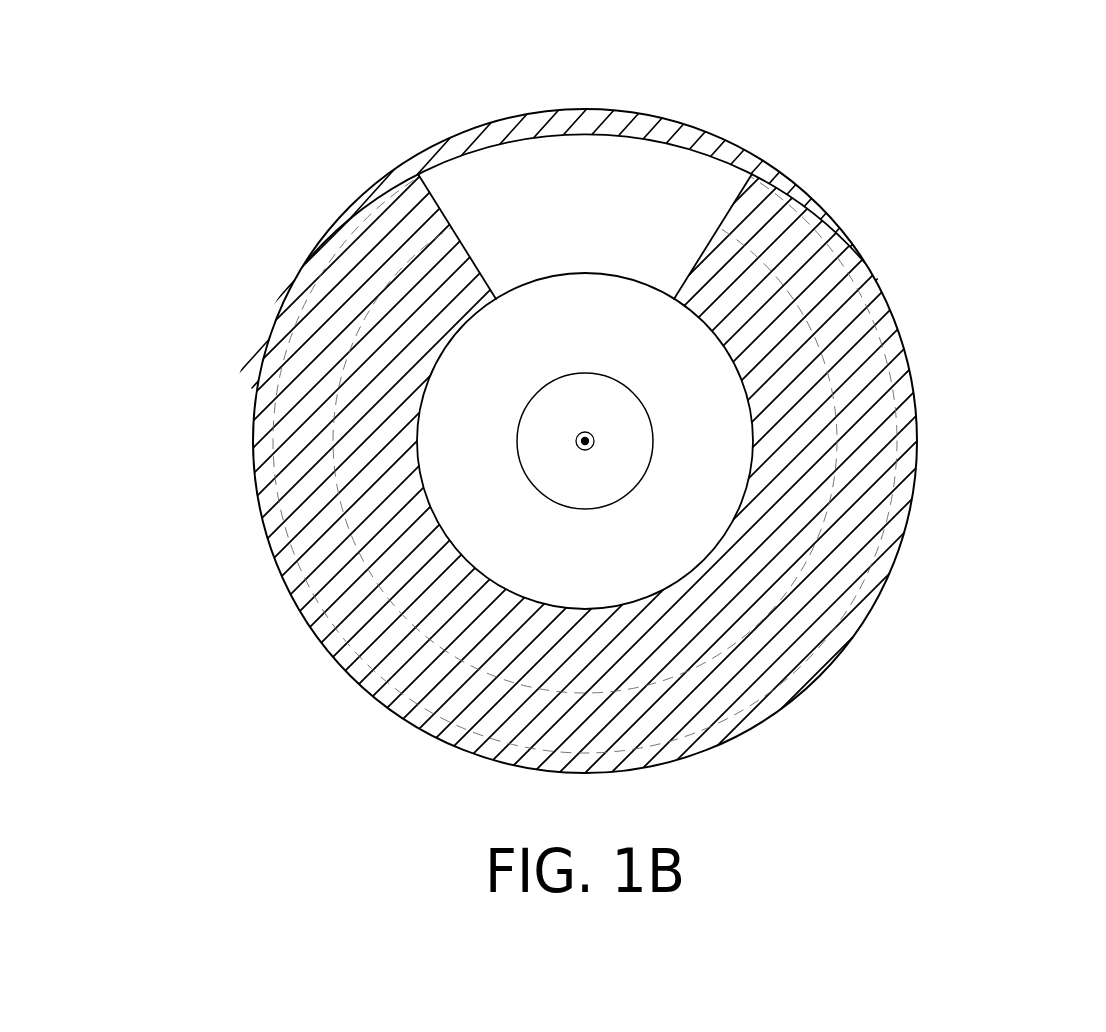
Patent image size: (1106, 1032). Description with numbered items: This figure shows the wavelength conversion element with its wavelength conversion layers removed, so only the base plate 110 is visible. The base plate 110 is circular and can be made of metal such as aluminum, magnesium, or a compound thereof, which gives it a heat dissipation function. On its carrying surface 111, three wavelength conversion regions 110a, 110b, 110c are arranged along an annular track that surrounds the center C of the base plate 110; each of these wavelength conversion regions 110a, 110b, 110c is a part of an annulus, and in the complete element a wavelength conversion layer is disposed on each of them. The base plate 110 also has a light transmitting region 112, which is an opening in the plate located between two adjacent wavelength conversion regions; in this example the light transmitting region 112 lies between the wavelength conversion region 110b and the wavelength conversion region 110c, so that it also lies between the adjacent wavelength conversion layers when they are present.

The base plate 110 is at (905, 347).
The wavelength conversion region 110a is at (806, 649).
The wavelength conversion region 110b is at (292, 427).
The wavelength conversion region 110c is at (878, 403).
The carrying surface 111 is at (889, 295).
The light transmitting region 112 is at (678, 172).
The center C is at (592, 441).